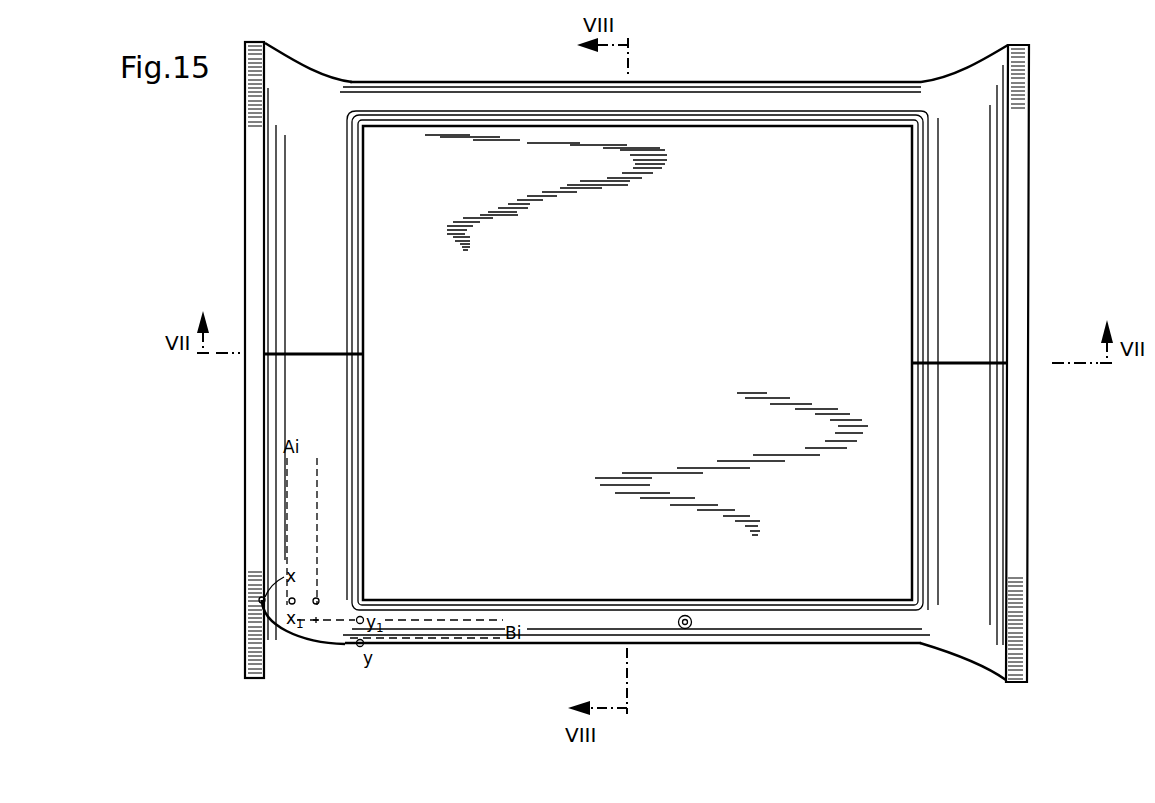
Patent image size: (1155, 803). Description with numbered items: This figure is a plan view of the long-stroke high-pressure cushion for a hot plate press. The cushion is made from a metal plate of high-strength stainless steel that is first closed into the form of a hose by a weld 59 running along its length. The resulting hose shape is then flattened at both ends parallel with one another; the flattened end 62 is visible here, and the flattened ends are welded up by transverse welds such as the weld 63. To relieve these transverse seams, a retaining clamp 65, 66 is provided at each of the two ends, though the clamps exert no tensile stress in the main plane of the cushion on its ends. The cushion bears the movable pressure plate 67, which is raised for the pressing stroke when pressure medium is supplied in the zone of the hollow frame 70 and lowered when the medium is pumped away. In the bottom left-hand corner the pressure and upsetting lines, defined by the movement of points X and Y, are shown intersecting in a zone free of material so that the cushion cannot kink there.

The weld 59 is at (990, 363).
The flattened end 62 is at (232, 652).
The transverse weld 63 is at (1037, 653).
The retaining clamp 65 is at (1018, 192).
The retaining clamp 66 is at (252, 232).
The movable pressure plate 67 is at (707, 135).
The hollow frame 70 is at (995, 131).